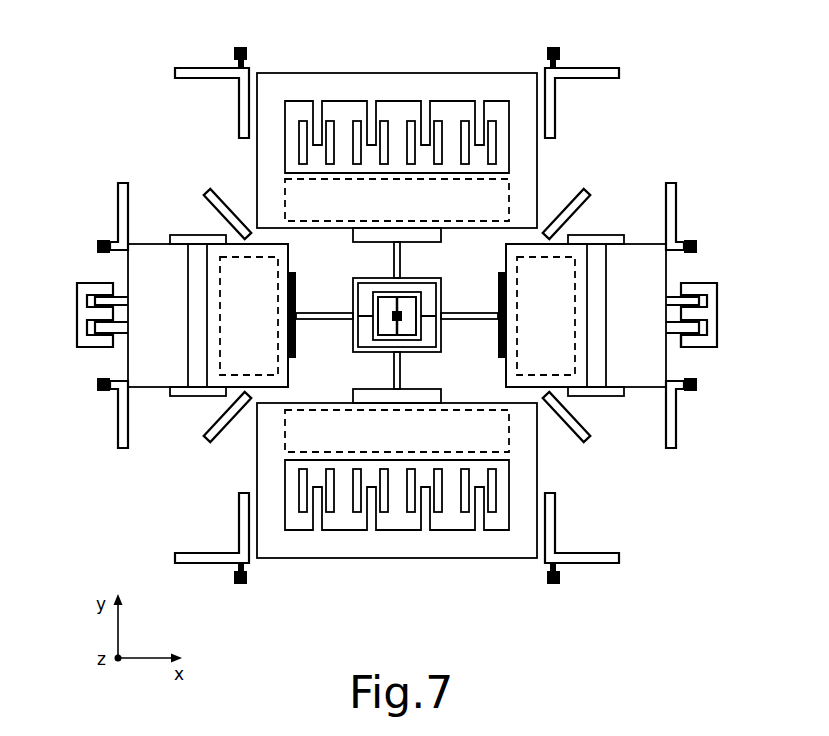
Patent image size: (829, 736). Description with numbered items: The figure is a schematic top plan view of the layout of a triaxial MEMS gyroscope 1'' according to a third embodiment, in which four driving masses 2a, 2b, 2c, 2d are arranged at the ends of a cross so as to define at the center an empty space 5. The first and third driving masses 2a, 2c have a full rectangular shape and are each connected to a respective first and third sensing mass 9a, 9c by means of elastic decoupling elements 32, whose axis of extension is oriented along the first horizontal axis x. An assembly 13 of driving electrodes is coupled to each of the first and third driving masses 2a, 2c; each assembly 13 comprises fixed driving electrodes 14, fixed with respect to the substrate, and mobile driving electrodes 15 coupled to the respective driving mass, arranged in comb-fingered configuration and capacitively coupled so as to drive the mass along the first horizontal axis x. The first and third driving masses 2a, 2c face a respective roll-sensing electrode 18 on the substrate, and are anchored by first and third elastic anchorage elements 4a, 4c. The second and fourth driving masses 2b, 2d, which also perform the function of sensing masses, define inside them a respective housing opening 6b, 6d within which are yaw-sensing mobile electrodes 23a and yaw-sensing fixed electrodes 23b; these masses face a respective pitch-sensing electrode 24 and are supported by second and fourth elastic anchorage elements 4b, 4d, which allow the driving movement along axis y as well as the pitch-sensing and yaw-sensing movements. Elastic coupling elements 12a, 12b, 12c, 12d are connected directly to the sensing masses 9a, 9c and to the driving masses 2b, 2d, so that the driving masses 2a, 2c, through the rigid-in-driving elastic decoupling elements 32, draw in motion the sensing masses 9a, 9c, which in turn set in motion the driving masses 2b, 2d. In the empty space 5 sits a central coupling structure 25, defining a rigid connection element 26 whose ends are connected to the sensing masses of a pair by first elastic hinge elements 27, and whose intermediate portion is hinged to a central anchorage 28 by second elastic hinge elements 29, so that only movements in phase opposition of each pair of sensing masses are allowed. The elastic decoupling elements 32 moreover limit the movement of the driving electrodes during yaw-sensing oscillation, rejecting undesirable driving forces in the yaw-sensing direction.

The MEMS gyroscope 1'' is at (396, 326).
The first driving mass 2a is at (638, 255).
The second driving mass 2b is at (322, 92).
The third driving mass 2c is at (145, 255).
The fourth driving mass 2d is at (487, 550).
The first elastic anchorage element 4a is at (680, 216).
The second elastic anchorage element 4b is at (180, 67).
The third elastic anchorage element 4c is at (116, 218).
The fourth elastic anchorage element 4d is at (585, 565).
The empty space 5 is at (486, 294).
The housing opening 6b is at (455, 108).
The housing opening 6d is at (352, 522).
The first sensing mass 9a is at (560, 388).
The third sensing mass 9c is at (235, 385).
The first elastic coupling element 12a is at (590, 192).
The second elastic coupling element 12b is at (210, 189).
The third elastic coupling element 12c is at (242, 426).
The fourth elastic coupling element 12d is at (567, 432).
The assembly of driving electrodes 13 is at (76, 298).
The fixed driving electrode 14 is at (702, 346).
The mobile driving electrode 15 is at (686, 345).
The roll-sensing electrode 18 is at (293, 272).
The yaw-sensing mobile electrode 23a is at (424, 108).
The yaw-sensing fixed electrode 23b is at (410, 121).
The pitch-sensing electrode 24 is at (508, 181).
The central coupling structure 25 is at (397, 315).
The rigid connection element 26 is at (414, 275).
The first elastic hinge element 27 is at (302, 295).
The central anchorage 28 is at (403, 316).
The second elastic hinge element 29 is at (392, 315).
The elastic decoupling element 32 is at (191, 236).